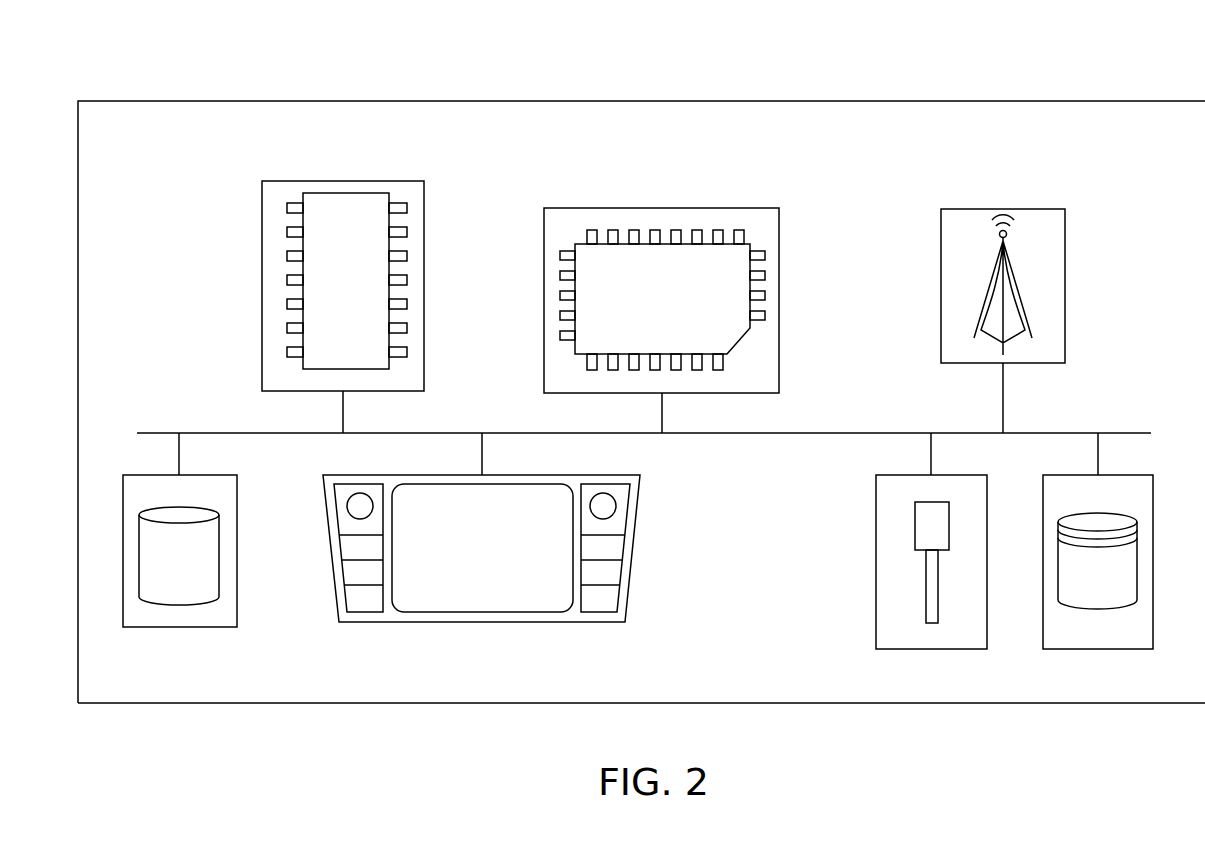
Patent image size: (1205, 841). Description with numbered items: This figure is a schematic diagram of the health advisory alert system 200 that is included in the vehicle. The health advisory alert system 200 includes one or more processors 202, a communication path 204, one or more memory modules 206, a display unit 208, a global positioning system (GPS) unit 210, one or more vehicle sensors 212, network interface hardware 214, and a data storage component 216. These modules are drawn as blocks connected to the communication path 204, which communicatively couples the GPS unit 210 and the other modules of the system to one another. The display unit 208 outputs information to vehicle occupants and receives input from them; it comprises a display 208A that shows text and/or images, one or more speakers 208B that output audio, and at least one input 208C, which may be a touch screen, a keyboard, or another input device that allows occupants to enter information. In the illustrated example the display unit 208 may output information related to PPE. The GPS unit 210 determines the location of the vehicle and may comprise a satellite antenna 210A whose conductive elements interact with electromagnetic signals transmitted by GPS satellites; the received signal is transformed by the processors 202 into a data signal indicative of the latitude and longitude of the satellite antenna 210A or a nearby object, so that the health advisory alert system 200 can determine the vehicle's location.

The health advisory alert system 200 is at (203, 100).
The processors 202 is at (343, 180).
The communication path 204 is at (1118, 433).
The memory modules 206 is at (660, 207).
The display unit 208 is at (482, 622).
The display 208A is at (522, 602).
The speakers 208B is at (349, 508).
The input 208C is at (349, 573).
The global positioning system (GPS) unit 210 is at (933, 649).
The satellite antenna 210A is at (914, 525).
The vehicle sensors 212 is at (178, 627).
The network interface hardware 214 is at (1000, 208).
The data storage component 216 is at (1097, 649).